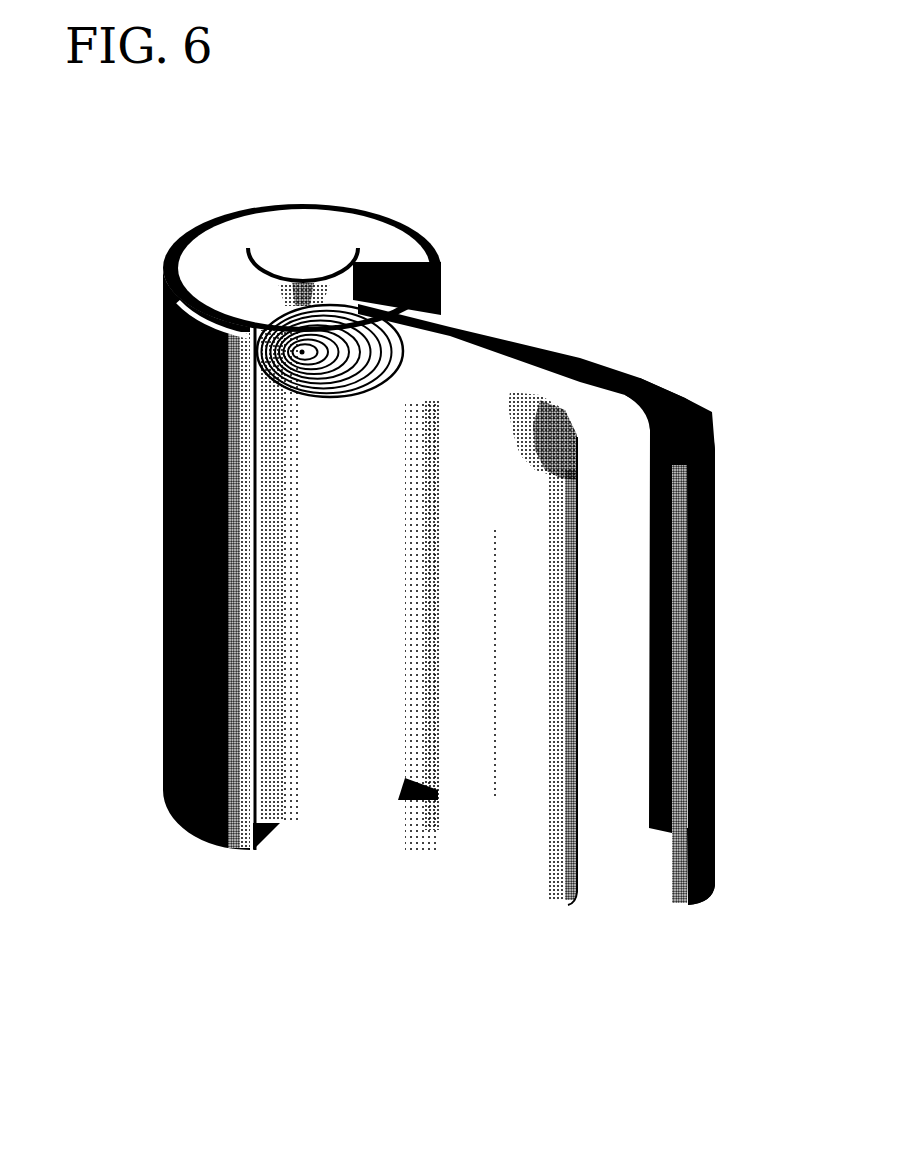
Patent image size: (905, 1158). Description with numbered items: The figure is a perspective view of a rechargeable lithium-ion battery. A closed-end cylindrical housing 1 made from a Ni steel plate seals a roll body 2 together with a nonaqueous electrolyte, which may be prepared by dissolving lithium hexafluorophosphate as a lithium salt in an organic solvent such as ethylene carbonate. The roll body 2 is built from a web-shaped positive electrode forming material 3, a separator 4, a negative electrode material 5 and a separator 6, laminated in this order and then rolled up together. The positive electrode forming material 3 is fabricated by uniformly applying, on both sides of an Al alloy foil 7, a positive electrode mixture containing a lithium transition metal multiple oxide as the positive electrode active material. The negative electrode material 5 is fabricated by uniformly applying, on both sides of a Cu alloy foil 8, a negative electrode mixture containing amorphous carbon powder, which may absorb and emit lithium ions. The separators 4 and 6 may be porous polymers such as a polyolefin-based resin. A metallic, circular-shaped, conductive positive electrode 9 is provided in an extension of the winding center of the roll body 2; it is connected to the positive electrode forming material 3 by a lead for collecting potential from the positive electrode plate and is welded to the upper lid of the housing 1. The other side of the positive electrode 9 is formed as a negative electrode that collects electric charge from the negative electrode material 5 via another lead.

The housing 1 is at (168, 730).
The roll body 2 is at (367, 437).
The positive electrode forming material 3 is at (407, 829).
The separator 4 is at (552, 386).
The negative electrode material 5 is at (688, 398).
The separator 6 is at (672, 380).
The Al alloy foil 7 is at (480, 691).
The Cu alloy foil 8 is at (696, 890).
The positive electrode 9 is at (239, 246).